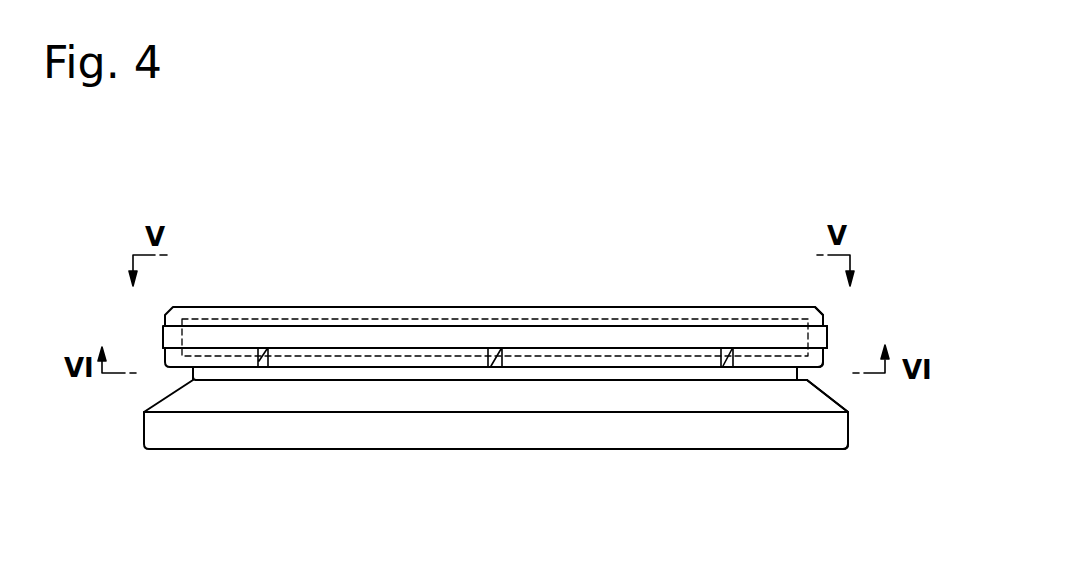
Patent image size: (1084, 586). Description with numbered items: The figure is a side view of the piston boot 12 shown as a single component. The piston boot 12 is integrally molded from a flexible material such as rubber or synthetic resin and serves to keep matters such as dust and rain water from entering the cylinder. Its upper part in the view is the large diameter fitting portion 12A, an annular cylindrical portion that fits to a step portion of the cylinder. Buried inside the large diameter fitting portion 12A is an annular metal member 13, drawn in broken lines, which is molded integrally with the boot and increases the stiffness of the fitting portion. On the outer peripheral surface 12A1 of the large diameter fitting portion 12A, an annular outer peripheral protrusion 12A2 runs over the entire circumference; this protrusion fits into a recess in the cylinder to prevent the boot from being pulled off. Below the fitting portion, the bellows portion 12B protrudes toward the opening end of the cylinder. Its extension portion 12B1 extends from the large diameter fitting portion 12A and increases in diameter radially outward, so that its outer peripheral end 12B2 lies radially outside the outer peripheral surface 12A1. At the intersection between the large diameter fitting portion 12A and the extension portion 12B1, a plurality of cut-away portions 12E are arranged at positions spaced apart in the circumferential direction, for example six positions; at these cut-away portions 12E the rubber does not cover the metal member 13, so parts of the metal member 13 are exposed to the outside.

The piston boot 12 is at (414, 293).
The large diameter fitting portion 12A is at (562, 314).
The outer peripheral surface 12A1 is at (823, 320).
The outer peripheral protrusion 12A2 is at (632, 336).
The bellows portion 12B is at (363, 427).
The extension portion 12B1 is at (637, 395).
The outer peripheral end 12B2 is at (847, 432).
The cut-away portions 12E is at (266, 349).
The metal member 13 is at (348, 326).